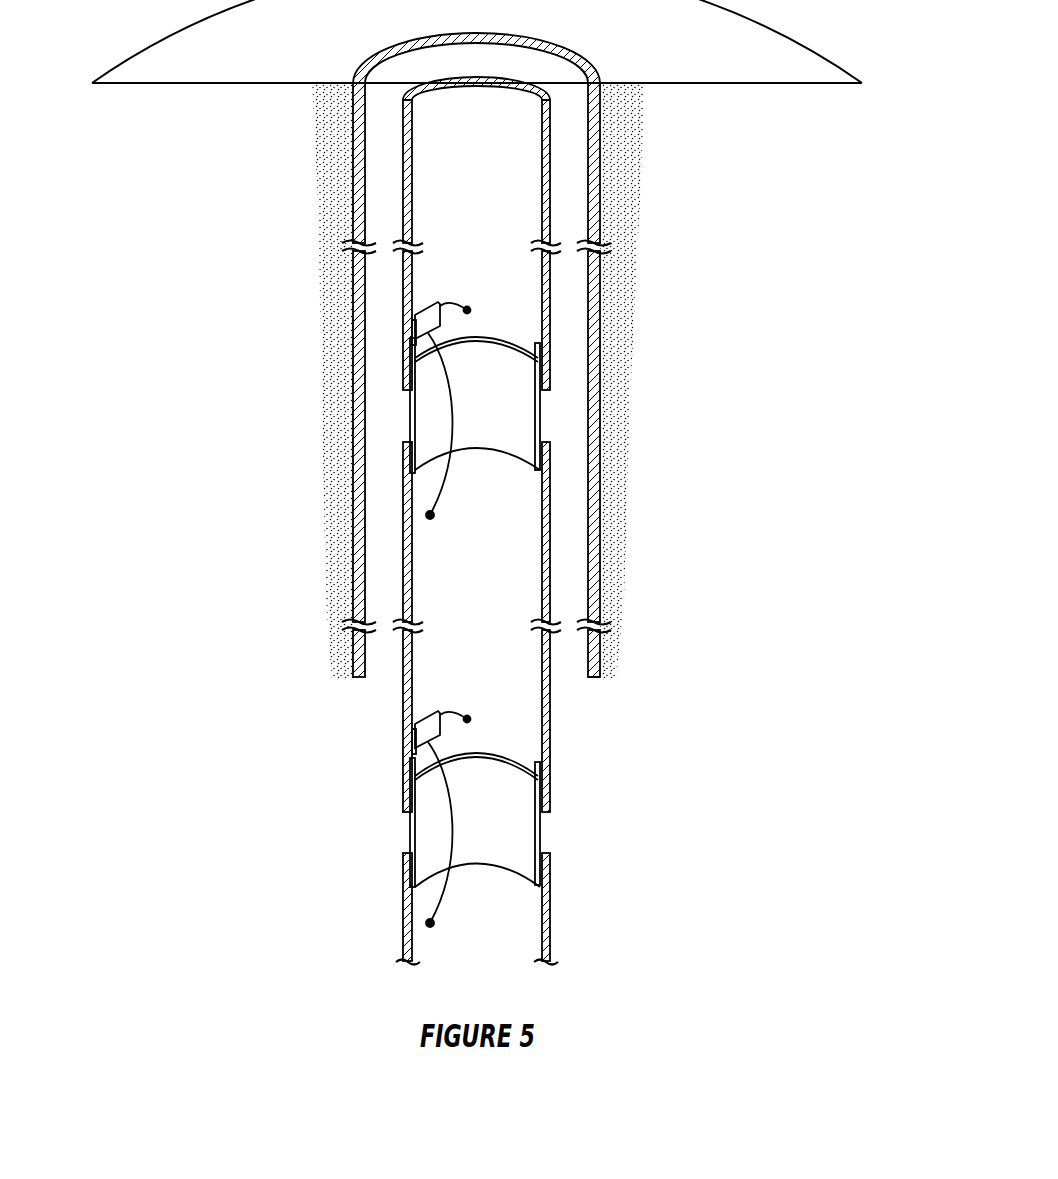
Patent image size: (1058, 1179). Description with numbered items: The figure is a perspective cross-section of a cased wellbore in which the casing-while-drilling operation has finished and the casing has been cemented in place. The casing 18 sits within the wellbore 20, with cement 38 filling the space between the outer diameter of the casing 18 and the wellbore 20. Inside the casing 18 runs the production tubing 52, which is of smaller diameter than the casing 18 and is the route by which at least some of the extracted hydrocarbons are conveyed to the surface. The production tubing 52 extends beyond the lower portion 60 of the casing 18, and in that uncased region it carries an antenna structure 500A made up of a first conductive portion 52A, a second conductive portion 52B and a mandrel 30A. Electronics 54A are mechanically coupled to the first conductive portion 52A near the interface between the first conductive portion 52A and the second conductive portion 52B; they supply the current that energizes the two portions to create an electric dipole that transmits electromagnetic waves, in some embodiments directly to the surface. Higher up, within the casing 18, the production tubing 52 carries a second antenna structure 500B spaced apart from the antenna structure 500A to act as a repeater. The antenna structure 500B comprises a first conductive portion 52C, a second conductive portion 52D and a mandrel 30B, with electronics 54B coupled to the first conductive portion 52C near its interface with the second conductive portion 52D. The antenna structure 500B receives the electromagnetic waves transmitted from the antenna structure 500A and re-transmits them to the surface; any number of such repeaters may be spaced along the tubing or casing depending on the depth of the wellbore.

The casing 18 is at (600, 138).
The wellbore 20 is at (616, 565).
The cement 38 is at (630, 209).
The production tubing 52 is at (549, 163).
The first conductive portion 52A is at (550, 792).
The second conductive portion 52B is at (550, 900).
The first conductive portion 52C is at (550, 293).
The second conductive portion 52D is at (550, 521).
The mandrel 30A is at (545, 835).
The mandrel 30B is at (543, 418).
The electronics 54A is at (413, 741).
The electronics 54B is at (413, 330).
The lower portion 60 is at (594, 677).
The antenna structure 500A is at (495, 817).
The second antenna structure 500B is at (525, 408).